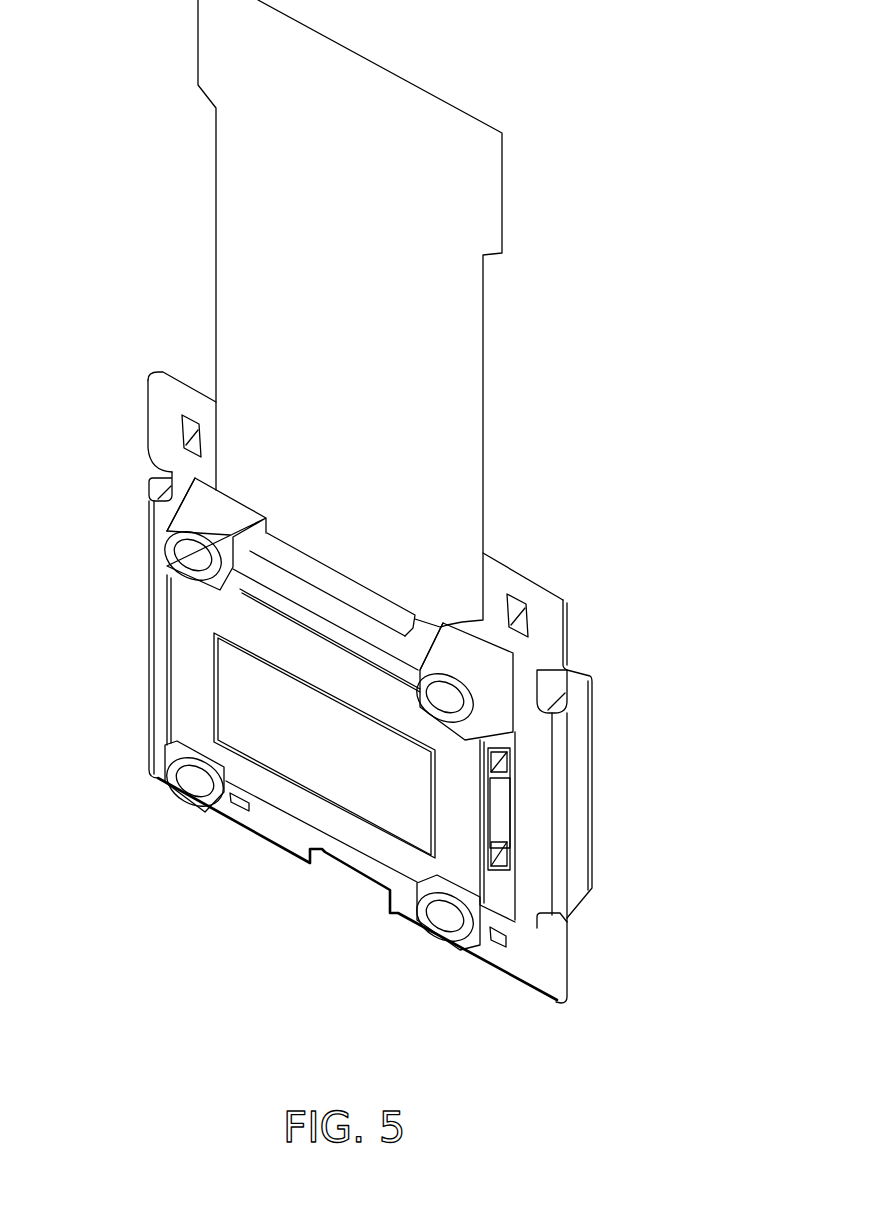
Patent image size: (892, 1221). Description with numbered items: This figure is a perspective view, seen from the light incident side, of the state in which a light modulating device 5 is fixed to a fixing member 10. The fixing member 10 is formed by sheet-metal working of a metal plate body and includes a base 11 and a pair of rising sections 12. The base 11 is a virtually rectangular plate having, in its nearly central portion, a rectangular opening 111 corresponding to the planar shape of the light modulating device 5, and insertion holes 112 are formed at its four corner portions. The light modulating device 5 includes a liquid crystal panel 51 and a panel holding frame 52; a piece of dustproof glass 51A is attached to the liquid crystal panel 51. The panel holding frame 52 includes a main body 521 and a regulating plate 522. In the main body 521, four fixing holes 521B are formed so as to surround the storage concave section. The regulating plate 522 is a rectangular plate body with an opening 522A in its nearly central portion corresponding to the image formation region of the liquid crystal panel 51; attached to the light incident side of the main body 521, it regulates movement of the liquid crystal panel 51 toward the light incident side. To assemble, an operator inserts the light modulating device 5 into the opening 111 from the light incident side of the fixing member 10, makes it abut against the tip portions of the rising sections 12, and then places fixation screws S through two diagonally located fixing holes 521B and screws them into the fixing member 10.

The light modulating device 5 is at (287, 731).
The fixing member 10 is at (644, 541).
The base 11 is at (497, 578).
The rising sections 12 is at (166, 478).
The opening 111 is at (503, 824).
The insertion holes 112 is at (188, 428).
The liquid crystal panel 51 is at (332, 727).
The dustproof glass 51A is at (327, 783).
The panel holding frame 52 is at (286, 731).
The main body 521 is at (286, 731).
The fixing holes 521B is at (194, 557).
The regulating plate 522 is at (257, 851).
The opening 522A is at (378, 818).
The fixation screws S is at (172, 752).